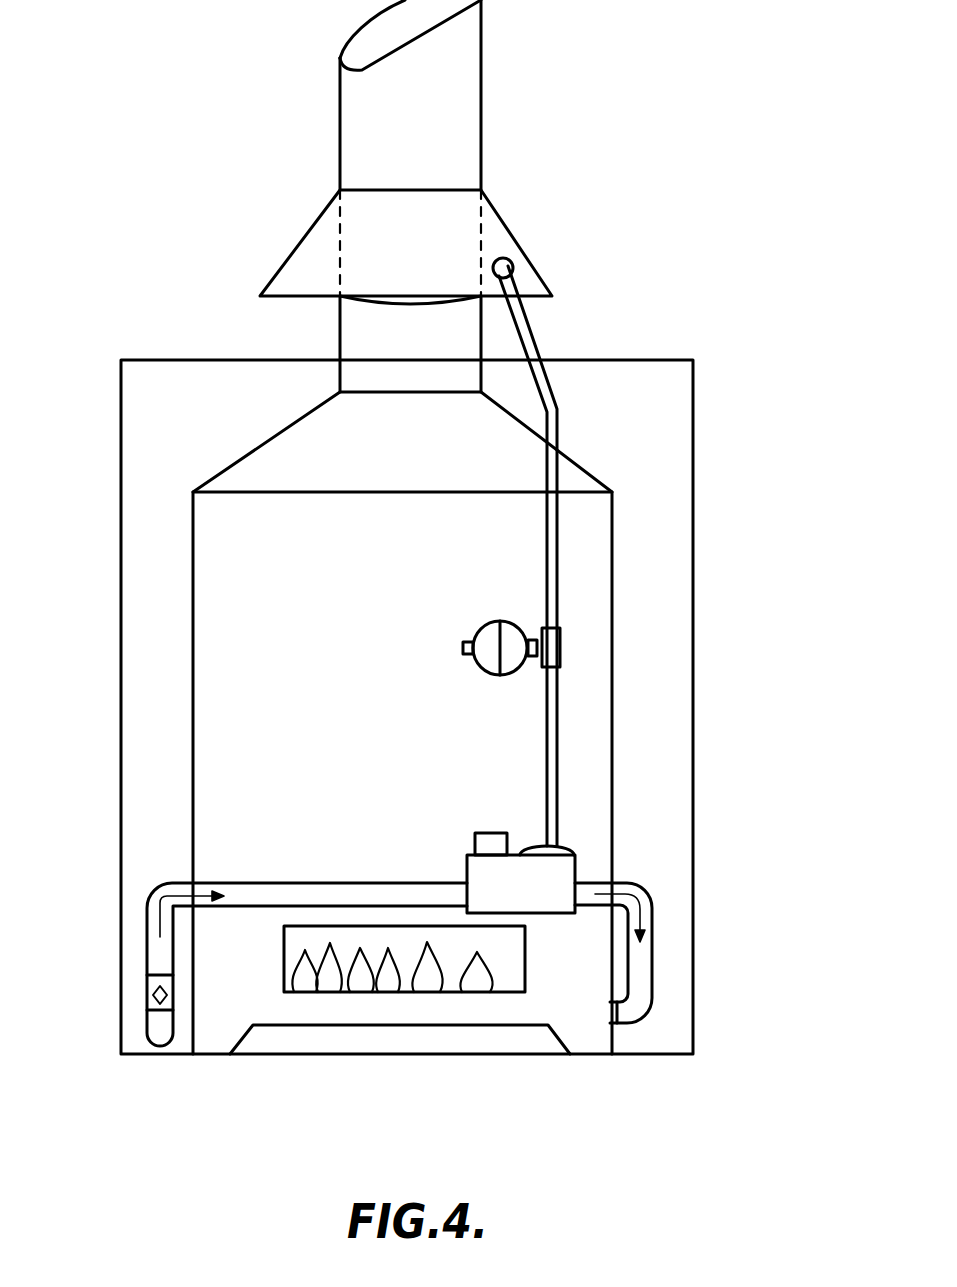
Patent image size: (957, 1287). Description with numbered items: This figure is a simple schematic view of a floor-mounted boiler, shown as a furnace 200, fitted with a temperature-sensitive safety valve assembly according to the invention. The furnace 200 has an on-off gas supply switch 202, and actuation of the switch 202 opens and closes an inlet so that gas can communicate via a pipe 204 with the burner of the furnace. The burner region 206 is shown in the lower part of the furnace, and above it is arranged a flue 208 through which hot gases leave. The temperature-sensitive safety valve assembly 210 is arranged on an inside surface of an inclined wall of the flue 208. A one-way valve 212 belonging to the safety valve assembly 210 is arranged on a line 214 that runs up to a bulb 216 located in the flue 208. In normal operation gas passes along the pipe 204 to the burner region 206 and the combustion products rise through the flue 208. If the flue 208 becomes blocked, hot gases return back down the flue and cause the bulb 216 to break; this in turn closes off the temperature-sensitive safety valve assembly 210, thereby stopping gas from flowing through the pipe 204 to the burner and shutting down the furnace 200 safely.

The furnace 200 is at (627, 359).
The on-off gas supply switch 202 is at (153, 998).
The pipe 204 is at (300, 882).
The burner region 206 is at (385, 993).
The flue 208 is at (295, 247).
The temperature-sensitive safety valve assembly 210 is at (577, 847).
The one-way valve 212 is at (560, 648).
The line 214 is at (558, 598).
The bulb 216 is at (513, 267).